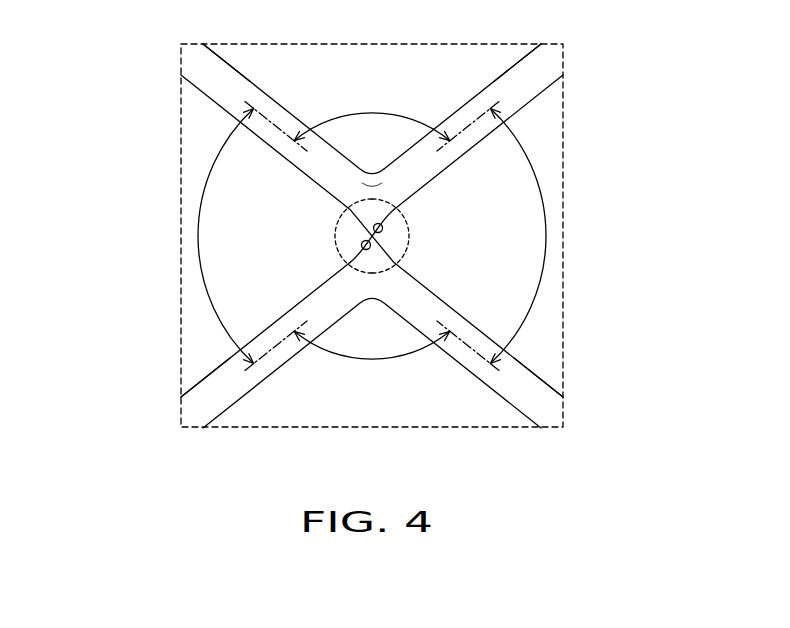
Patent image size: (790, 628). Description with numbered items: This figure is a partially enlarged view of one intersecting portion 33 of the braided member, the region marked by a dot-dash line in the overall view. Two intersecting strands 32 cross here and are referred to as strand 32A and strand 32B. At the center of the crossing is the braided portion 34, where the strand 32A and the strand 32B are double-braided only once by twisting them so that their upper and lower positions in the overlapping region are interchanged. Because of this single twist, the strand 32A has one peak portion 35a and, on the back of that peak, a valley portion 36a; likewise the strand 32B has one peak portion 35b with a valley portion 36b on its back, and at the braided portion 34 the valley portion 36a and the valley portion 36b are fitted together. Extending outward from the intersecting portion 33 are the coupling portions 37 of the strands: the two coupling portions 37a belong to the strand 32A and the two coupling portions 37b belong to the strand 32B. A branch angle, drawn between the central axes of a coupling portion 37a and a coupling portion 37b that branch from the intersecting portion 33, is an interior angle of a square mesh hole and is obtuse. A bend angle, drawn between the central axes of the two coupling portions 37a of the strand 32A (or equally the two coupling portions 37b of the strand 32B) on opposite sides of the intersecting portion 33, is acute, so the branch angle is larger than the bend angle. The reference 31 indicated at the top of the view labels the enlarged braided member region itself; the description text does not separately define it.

The cross-shaped member 31 is at (417, 78).
The strand 32 is at (372, 236).
The strand 32A is at (208, 96).
The strand 32B is at (536, 96).
The intersecting portion 33 is at (400, 211).
The braided portion 34 is at (371, 196).
The peak portion 35a is at (409, 236).
The peak portion 35b is at (336, 236).
The valley portion 36a is at (371, 248).
The valley portion 36b is at (373, 226).
The coupling portion 37 is at (372, 204).
The coupling portion 37a is at (230, 63).
The coupling portion 37b is at (515, 63).